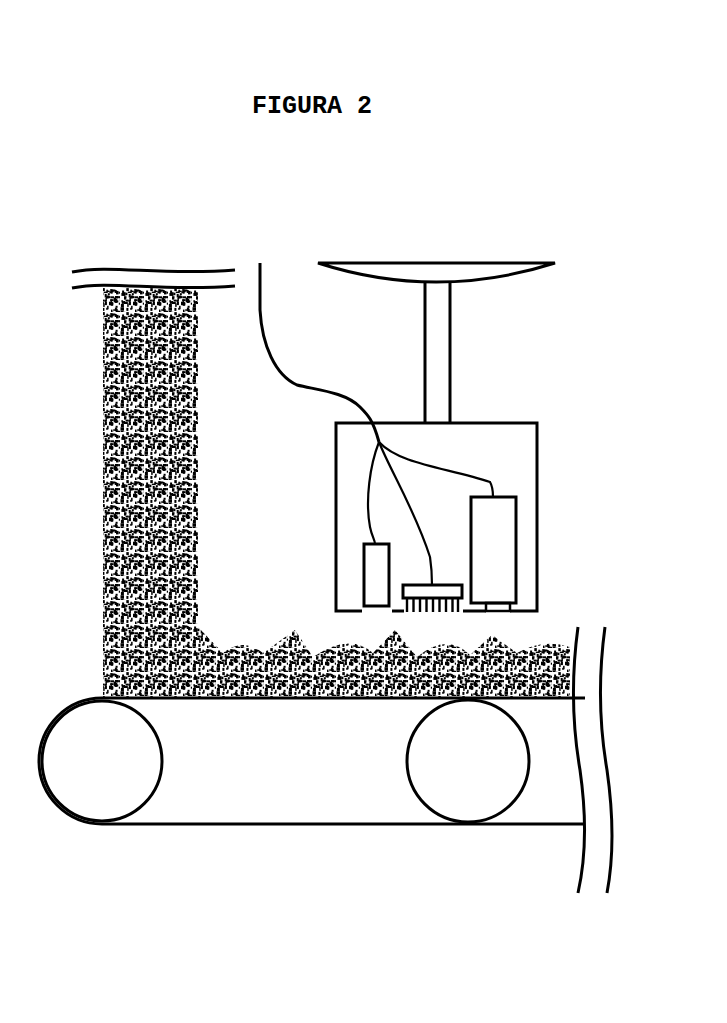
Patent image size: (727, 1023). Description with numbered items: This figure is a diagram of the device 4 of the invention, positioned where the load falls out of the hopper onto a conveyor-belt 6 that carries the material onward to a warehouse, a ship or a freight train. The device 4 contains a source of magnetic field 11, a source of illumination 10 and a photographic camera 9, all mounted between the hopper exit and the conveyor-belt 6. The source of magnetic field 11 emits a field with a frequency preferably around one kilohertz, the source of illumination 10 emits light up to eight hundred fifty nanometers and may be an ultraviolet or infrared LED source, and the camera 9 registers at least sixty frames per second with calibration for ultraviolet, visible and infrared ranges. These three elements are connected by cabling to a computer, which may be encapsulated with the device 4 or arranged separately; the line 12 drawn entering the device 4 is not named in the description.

The device 4 is at (336, 468).
The conveyor-belt 6 is at (437, 828).
The photographic camera 9 is at (522, 545).
The source of illumination 10 is at (443, 572).
The source of magnetic field 11 is at (355, 572).
The cable 12 is at (255, 262).